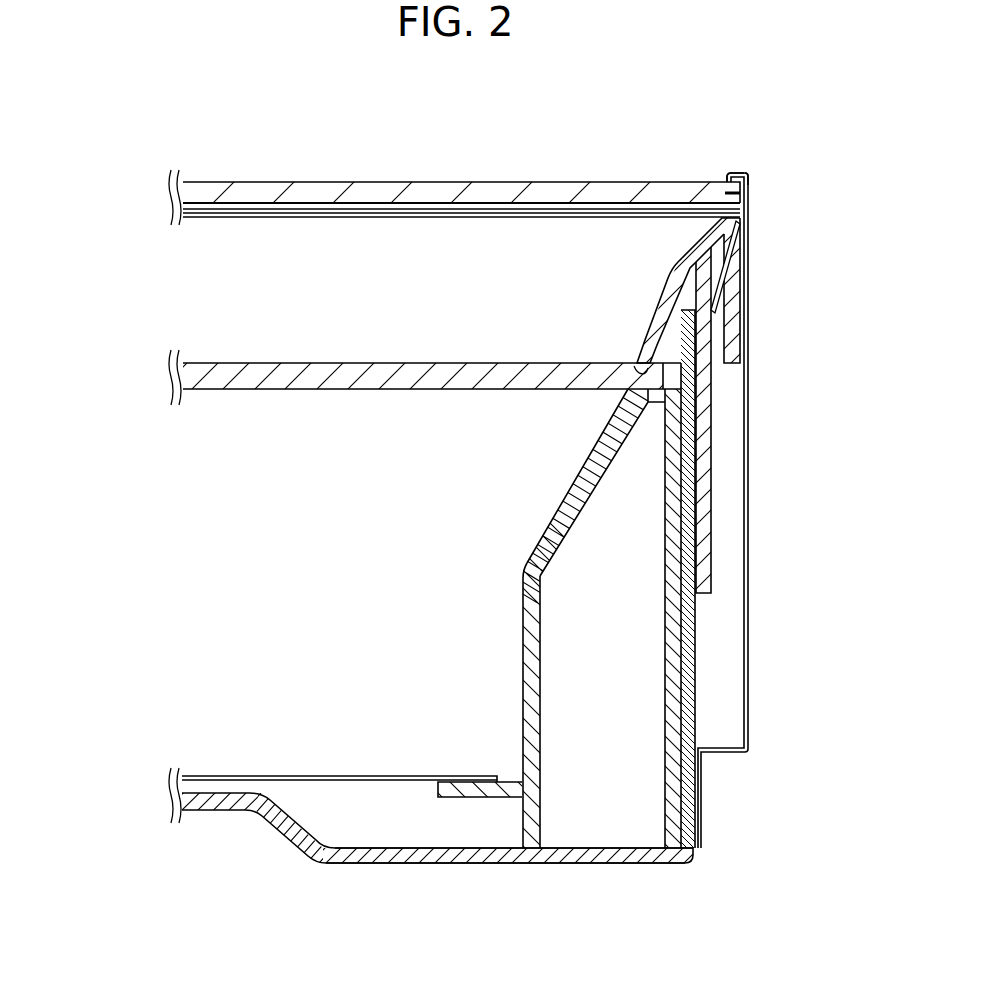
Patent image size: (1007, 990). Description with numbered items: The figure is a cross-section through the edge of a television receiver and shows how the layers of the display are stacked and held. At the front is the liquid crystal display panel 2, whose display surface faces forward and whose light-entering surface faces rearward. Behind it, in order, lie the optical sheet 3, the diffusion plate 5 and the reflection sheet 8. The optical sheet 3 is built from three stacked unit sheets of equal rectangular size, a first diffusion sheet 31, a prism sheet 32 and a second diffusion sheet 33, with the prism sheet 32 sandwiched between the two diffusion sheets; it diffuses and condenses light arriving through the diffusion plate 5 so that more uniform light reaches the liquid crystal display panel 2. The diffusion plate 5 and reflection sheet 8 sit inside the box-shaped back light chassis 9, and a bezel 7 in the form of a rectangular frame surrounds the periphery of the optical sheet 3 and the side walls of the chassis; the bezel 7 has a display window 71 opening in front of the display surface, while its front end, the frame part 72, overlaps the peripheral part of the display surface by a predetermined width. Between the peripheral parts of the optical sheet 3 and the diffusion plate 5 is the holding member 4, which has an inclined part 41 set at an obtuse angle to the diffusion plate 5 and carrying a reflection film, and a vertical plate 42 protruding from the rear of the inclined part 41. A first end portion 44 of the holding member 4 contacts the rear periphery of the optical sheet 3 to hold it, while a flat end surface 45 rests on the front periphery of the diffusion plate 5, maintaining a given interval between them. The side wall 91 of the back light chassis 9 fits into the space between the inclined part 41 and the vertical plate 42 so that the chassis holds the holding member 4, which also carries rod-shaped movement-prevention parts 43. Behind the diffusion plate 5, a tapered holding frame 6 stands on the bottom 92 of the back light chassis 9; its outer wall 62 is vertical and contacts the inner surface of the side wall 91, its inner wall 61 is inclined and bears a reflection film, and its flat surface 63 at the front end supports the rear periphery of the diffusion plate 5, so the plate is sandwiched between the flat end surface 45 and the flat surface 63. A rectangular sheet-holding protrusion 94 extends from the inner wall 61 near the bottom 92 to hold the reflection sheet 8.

The liquid crystal display panel 2 is at (432, 183).
The optical sheet 3 is at (402, 212).
The first diffusion sheet 31 is at (425, 239).
The prism sheet 32 is at (193, 207).
The second diffusion sheet 33 is at (193, 200).
The holding member 4 is at (688, 405).
The inclined part 41 is at (700, 253).
The vertical plate 42 is at (703, 507).
The movement-prevention part 43 is at (736, 332).
The first end portion 44 is at (742, 225).
The flat end surface 45 is at (643, 370).
The diffusion plate 5 is at (272, 363).
The holding frame 6 is at (668, 619).
The inner wall 61 is at (525, 633).
The outer wall 62 is at (675, 805).
The flat surface 63 is at (628, 397).
The bezel 7 is at (739, 468).
The display window 71 is at (731, 174).
The frame part 72 is at (747, 172).
The reflection sheet 8 is at (242, 776).
The back light chassis 9 is at (484, 643).
The side wall 91 is at (690, 655).
The bottom 92 is at (558, 864).
The sheet-holding protrusion 94 is at (453, 783).